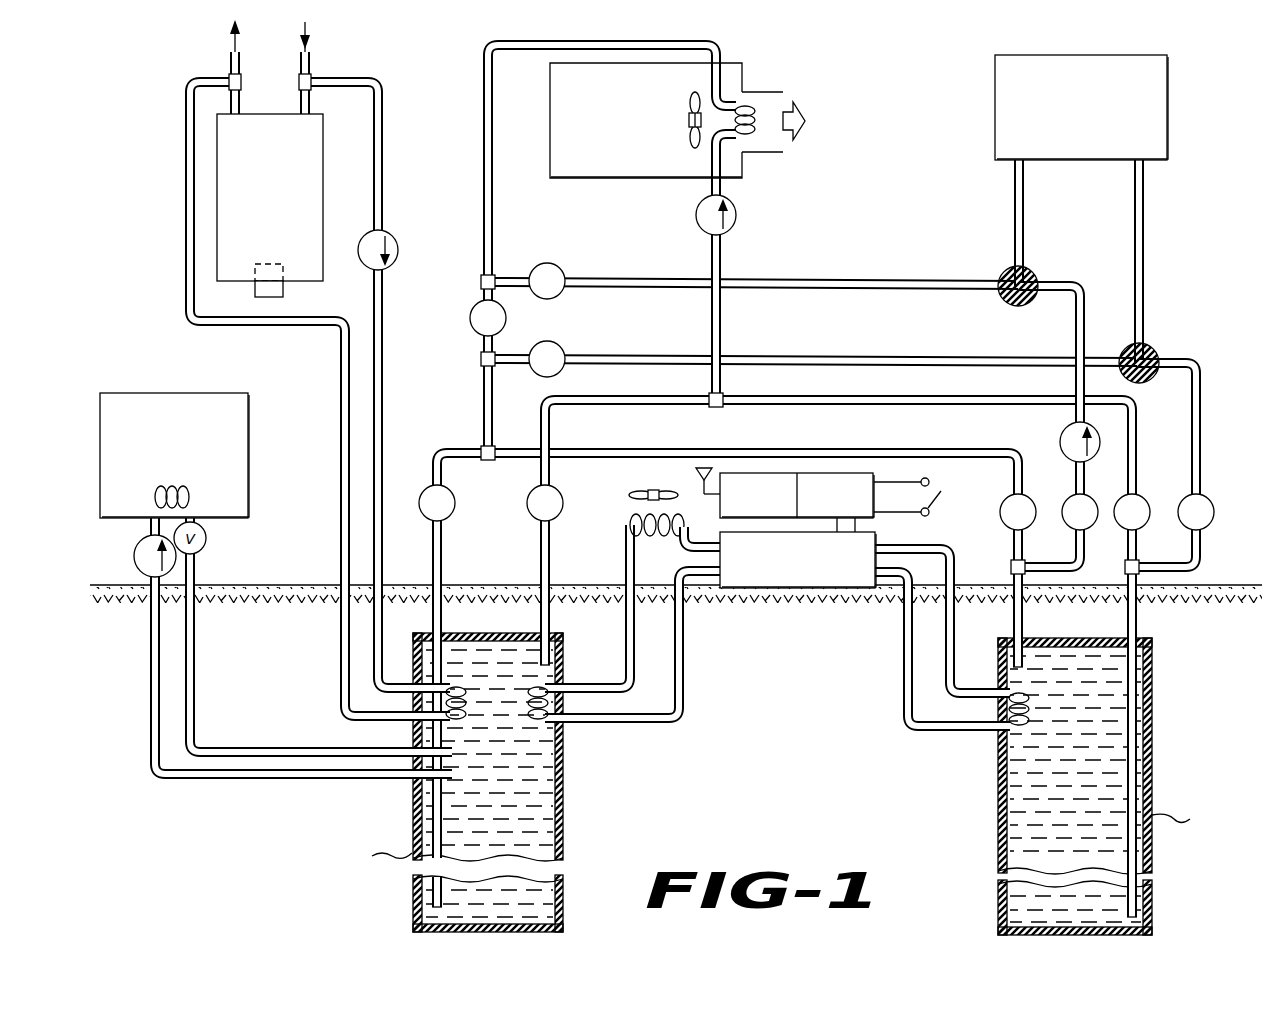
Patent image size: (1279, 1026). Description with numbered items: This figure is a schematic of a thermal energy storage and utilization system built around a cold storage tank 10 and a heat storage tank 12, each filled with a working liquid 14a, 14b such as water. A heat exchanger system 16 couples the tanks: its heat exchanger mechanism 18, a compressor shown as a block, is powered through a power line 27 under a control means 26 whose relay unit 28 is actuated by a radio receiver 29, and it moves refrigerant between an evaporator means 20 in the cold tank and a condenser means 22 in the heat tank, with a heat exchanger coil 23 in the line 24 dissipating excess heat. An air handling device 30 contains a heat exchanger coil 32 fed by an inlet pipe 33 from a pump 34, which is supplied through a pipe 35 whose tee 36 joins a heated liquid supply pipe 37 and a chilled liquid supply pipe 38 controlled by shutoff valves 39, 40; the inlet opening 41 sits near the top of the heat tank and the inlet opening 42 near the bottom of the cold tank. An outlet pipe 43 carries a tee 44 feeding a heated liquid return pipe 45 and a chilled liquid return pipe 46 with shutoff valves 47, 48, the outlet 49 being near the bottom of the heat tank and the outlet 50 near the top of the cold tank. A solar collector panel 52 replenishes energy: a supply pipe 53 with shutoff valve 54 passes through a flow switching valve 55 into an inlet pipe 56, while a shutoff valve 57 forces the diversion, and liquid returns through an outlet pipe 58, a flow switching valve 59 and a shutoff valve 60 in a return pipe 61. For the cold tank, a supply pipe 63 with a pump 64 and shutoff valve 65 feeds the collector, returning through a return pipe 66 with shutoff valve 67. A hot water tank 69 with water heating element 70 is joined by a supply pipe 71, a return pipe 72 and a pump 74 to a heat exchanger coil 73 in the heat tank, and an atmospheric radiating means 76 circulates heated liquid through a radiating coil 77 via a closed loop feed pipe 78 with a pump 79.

The cold storage tank 10 is at (1158, 710).
The heat storage tank 12 is at (566, 784).
The working liquid 14a is at (1000, 803).
The working liquid 14b is at (543, 836).
The heat exchanger system 16 is at (793, 595).
The heat exchanger mechanism 18 is at (752, 590).
The evaporator means 20 is at (1003, 712).
The condenser means 22 is at (563, 704).
The heat exchanger coil 23 is at (660, 540).
The line 24 is at (622, 567).
The control means 26 is at (884, 525).
The power line 27 is at (942, 494).
The receiver and relay unit 28 is at (875, 495).
The radio receiver 29 is at (718, 503).
The air handling device 30 is at (635, 178).
The heat exchanger coil 32 is at (758, 100).
The inlet pipe 33 is at (722, 189).
The pump 34 is at (737, 216).
The pipe 35 is at (722, 250).
The tee 36 is at (721, 406).
The heated liquid supply pipe 37 is at (552, 410).
The chilled liquid supply pipe 38 is at (898, 405).
The shutoff valve 39 is at (563, 500).
The shutoff valve 40 is at (1145, 500).
The inlet opening 41 is at (562, 660).
The inlet opening 42 is at (1142, 910).
The outlet pipe 43 is at (482, 193).
The tee 44 is at (478, 445).
The heated liquid return pipe 45 is at (428, 465).
The chilled liquid return pipe 46 is at (1002, 451).
The shutoff valve 47 is at (455, 503).
The shutoff valve 48 is at (1000, 518).
The outlet 49 is at (430, 908).
The outlet 50 is at (1012, 668).
The solar collector panel 52 is at (1170, 108).
The supply pipe 53 is at (658, 276).
The shutoff valve 54 is at (560, 270).
The flow switching valve 55 is at (1000, 272).
The inlet pipe 56 is at (1013, 203).
The shutoff valve 57 is at (470, 316).
The outlet pipe 58 is at (1144, 220).
The flow switching valve 59 is at (1152, 350).
The shutoff valve 60 is at (562, 347).
The return pipe 61 is at (854, 358).
The supply pipe 63 is at (1075, 325).
The pump 64 is at (1060, 440).
The shutoff valve 65 is at (1063, 502).
The return pipe 66 is at (1203, 402).
The shutoff valve 67 is at (1214, 508).
The hot water tank 69 is at (326, 131).
The water heating element 70 is at (284, 292).
The supply pipe 71 is at (385, 137).
The return pipe 72 is at (183, 160).
The heat exchanger coil 73 is at (443, 699).
The pump 74 is at (398, 248).
The atmospheric radiating means 76 is at (250, 420).
The radiating coil 77 is at (195, 492).
The closed loop feed pipe 78 is at (187, 628).
The pump 79 is at (133, 560).